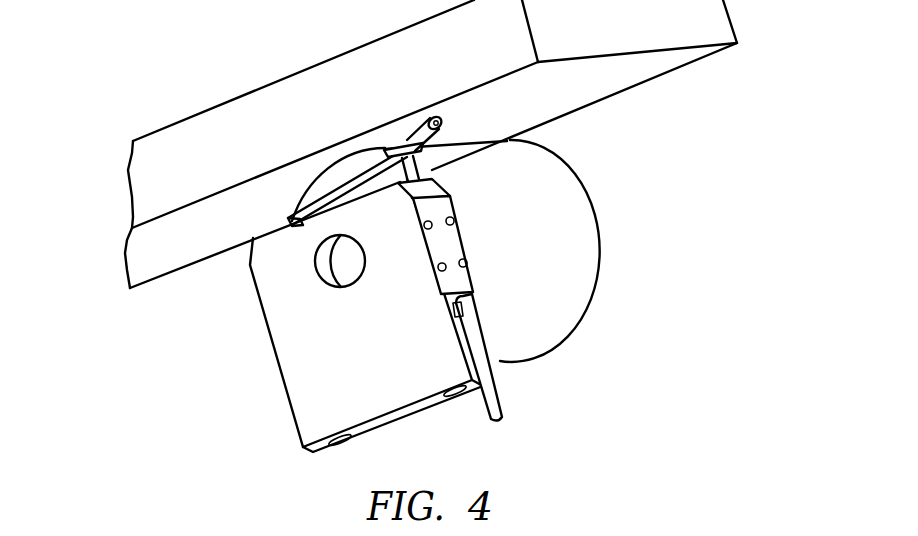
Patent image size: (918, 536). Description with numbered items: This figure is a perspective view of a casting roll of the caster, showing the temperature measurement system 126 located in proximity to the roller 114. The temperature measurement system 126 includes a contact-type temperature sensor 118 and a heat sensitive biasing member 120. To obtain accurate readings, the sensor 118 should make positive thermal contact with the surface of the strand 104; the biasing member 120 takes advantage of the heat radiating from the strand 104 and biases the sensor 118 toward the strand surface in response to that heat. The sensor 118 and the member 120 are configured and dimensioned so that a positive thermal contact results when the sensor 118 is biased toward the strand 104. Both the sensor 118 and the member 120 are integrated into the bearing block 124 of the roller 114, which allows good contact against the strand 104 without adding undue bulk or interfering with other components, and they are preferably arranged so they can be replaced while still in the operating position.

The strand 104 is at (742, 30).
The roller 114 is at (588, 249).
The temperature sensor 118 is at (507, 402).
The heat sensitive biasing member 120 is at (235, 98).
The bearing block 124 is at (302, 412).
The temperature measurement system 126 is at (147, 67).